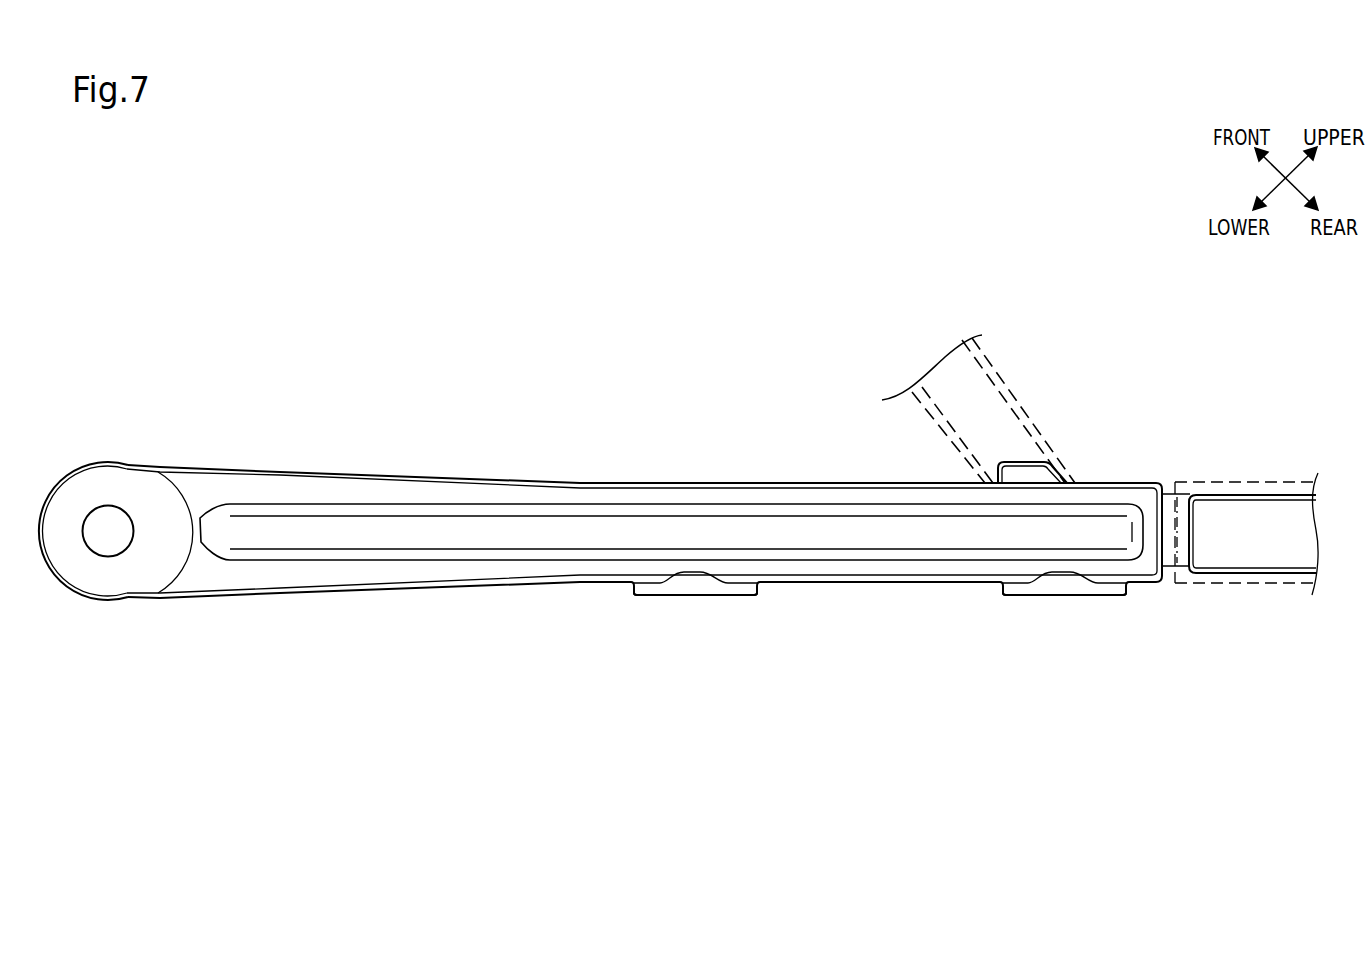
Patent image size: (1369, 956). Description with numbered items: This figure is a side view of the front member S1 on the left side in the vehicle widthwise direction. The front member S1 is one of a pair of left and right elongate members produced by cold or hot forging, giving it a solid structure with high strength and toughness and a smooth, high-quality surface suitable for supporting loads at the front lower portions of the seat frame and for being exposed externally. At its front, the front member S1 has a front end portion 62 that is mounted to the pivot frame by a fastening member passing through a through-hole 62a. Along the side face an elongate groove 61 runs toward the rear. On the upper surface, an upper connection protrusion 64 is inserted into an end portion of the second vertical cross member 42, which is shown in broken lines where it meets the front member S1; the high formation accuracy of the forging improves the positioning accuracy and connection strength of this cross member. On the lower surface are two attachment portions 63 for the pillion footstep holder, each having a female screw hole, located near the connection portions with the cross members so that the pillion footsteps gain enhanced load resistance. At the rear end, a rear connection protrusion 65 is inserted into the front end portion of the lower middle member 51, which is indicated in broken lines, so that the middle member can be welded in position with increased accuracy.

The front member S1 is at (620, 433).
The groove portion 61 is at (720, 523).
The front end portion 62 is at (88, 568).
The through-hole 62a is at (114, 527).
The attachment portion 63 is at (685, 584).
The upper connection protrusion 64 is at (1027, 480).
The second vertical cross member 42 is at (992, 372).
The lower middle member 51 is at (1270, 482).
The rear connection protrusion 65 is at (1183, 530).